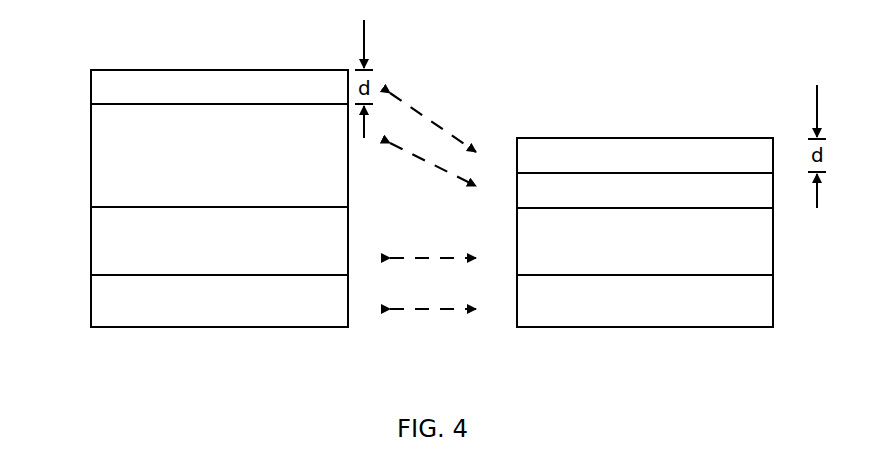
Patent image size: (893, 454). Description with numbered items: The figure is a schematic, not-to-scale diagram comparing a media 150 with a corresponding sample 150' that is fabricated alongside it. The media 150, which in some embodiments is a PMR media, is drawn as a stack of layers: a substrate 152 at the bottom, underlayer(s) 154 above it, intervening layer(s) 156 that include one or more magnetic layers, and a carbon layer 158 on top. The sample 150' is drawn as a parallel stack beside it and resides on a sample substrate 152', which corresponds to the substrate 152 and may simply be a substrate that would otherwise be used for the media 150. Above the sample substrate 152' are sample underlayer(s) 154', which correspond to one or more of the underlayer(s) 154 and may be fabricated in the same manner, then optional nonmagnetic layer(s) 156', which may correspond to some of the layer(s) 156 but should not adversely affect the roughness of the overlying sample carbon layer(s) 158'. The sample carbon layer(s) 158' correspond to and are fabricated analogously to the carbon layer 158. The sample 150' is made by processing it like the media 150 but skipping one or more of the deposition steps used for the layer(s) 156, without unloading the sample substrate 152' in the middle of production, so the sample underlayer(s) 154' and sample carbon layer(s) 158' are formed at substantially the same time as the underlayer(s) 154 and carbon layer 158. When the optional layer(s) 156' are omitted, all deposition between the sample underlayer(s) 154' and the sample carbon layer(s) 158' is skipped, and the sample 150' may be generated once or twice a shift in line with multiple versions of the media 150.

The media 150 is at (193, 208).
The substrate 152 is at (193, 306).
The underlayer(s) 154 is at (193, 241).
The intervening layer(s) 156 is at (193, 155).
The carbon layer 158 is at (193, 66).
The sample 150' is at (646, 236).
The sample substrate 152' is at (673, 294).
The sample underlayer(s) 154' is at (617, 241).
The optional nonmagnetic layer(s) 156' is at (673, 208).
The sample carbon layer(s) 158' is at (645, 133).